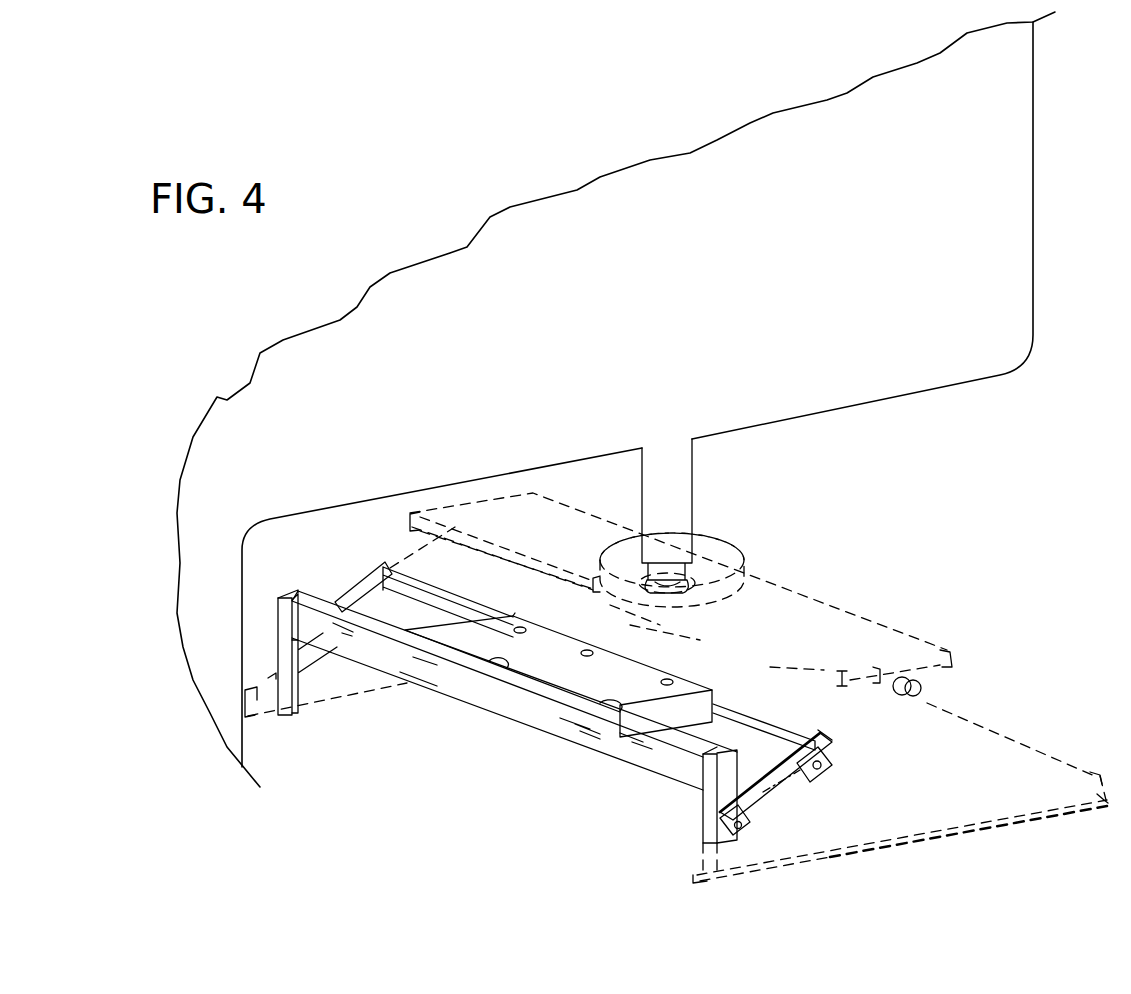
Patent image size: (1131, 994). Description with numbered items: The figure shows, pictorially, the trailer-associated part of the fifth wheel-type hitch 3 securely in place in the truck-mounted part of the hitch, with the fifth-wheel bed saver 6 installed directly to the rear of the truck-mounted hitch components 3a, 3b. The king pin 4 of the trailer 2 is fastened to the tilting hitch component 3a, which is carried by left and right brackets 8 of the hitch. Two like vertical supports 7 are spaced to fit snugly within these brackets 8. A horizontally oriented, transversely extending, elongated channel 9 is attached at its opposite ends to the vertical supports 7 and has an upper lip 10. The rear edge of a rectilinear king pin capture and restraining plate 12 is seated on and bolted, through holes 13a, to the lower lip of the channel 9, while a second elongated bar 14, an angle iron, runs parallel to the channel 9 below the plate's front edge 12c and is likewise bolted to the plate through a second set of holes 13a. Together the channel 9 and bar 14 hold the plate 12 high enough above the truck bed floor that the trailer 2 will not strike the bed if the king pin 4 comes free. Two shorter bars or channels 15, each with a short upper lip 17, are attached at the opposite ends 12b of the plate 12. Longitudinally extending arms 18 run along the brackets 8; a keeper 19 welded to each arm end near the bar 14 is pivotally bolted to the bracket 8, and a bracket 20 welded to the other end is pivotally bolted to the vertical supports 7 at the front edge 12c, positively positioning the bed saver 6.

The towed vehicle or trailer 2 is at (625, 397).
The fifth wheel-type hitch 3 is at (718, 528).
The tilting hitch component 3a is at (735, 542).
The hitch component 3b is at (900, 607).
The king pin 4 is at (680, 467).
The fifth-wheel bed saver 6 is at (582, 686).
The vertical supports 7 is at (283, 716).
The brackets 8 is at (343, 708).
The elongated channel 9 is at (510, 725).
The upper lip 10 is at (491, 662).
The king pin capture and restraining plate 12 is at (606, 688).
The opposite ends of the plate 12b is at (515, 613).
The front edge 12c is at (670, 688).
The holes 13a is at (632, 658).
The elongated bar 14 is at (797, 737).
The shorter bars or channels 15 is at (487, 608).
The short upper lip 17 is at (443, 630).
The longitudinally extending arms 18 is at (341, 597).
The keeper 19 is at (830, 768).
The bracket 20 is at (740, 838).